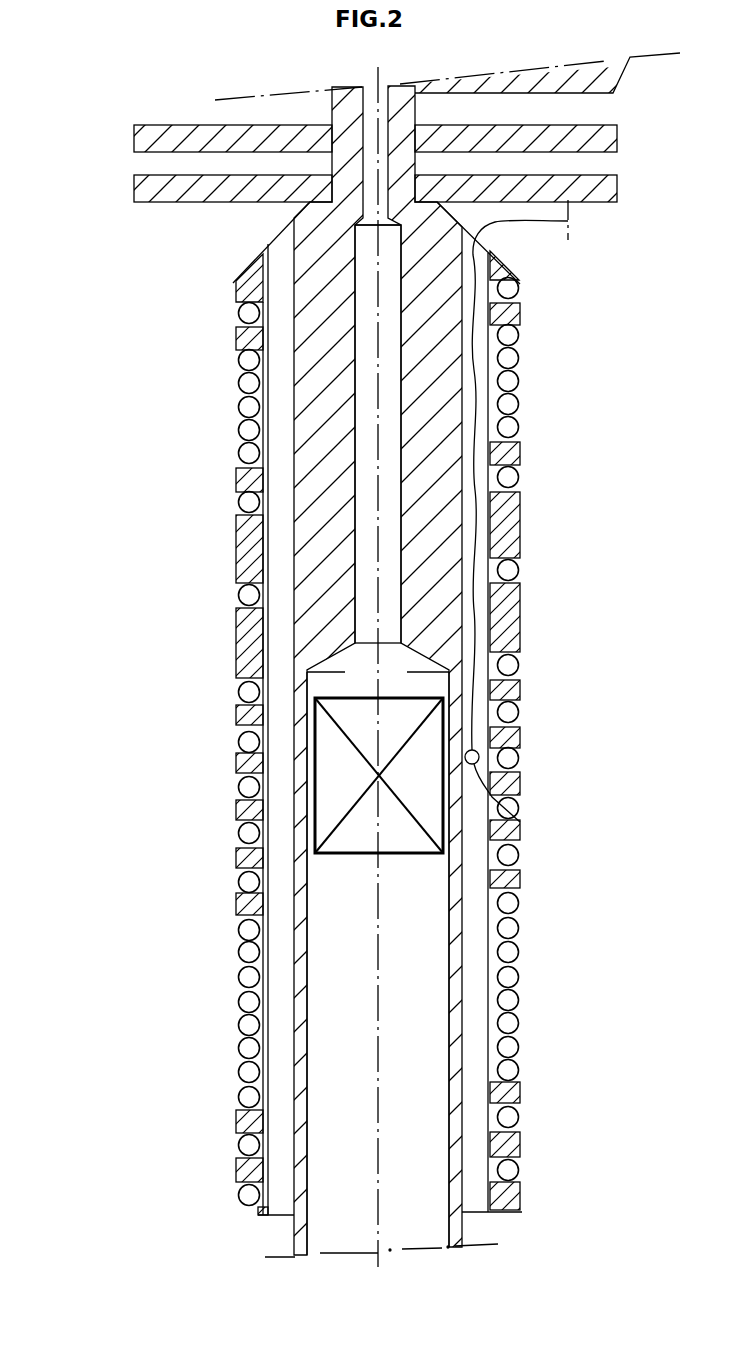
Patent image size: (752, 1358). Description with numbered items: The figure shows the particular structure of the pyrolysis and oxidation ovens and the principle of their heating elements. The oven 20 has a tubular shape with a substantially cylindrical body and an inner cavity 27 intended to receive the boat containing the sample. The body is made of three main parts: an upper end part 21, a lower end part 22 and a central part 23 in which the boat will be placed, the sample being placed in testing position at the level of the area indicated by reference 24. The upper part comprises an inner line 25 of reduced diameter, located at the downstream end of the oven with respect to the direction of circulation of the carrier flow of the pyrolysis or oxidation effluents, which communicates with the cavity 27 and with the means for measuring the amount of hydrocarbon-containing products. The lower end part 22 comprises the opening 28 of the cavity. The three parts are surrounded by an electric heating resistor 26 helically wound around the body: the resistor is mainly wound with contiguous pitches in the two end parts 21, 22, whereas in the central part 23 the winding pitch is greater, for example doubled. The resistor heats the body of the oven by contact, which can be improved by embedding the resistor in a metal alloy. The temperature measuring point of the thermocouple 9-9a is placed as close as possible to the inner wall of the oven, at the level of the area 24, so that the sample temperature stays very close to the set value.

The oven 20 is at (116, 278).
The upper end part 21 is at (543, 268).
The lower end part 22 is at (548, 892).
The central part 23 is at (548, 635).
The sample testing position 24 is at (333, 775).
The inner line of reduced diameter 25 is at (368, 440).
The electric heating resistor 26 is at (245, 502).
The inner cavity 27 is at (357, 955).
The opening 28 is at (378, 1252).
The thermocouple 9-9a is at (517, 822).